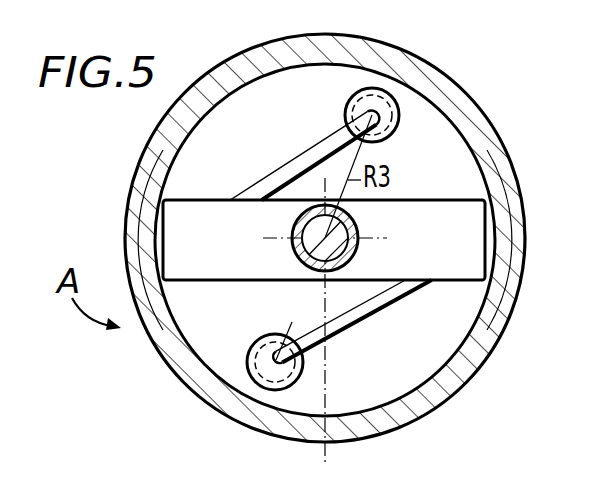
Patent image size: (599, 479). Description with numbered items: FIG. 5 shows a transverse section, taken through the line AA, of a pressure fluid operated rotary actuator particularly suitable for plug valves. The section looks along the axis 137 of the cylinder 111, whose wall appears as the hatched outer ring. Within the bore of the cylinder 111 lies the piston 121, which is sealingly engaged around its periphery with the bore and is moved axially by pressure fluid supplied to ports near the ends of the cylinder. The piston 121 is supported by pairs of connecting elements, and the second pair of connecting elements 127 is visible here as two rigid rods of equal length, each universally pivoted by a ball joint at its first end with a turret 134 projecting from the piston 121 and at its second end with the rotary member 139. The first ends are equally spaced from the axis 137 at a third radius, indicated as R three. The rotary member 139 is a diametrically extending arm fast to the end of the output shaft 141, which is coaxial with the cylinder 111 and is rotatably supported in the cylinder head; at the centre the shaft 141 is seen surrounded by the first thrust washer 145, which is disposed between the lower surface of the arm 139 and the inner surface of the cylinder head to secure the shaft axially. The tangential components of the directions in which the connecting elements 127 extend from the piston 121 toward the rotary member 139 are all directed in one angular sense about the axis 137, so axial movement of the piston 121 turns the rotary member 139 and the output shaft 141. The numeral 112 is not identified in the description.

The cylinder 111 is at (495, 143).
The piston 121 is at (229, 167).
The second pair of connecting elements 127 is at (286, 172).
The turret 134 is at (346, 98).
The axis 137 is at (326, 452).
The rotary member 139 is at (432, 255).
The output shaft 141 is at (313, 252).
The first thrust washer 145 is at (292, 249).
The housing part 112 is at (514, 473).